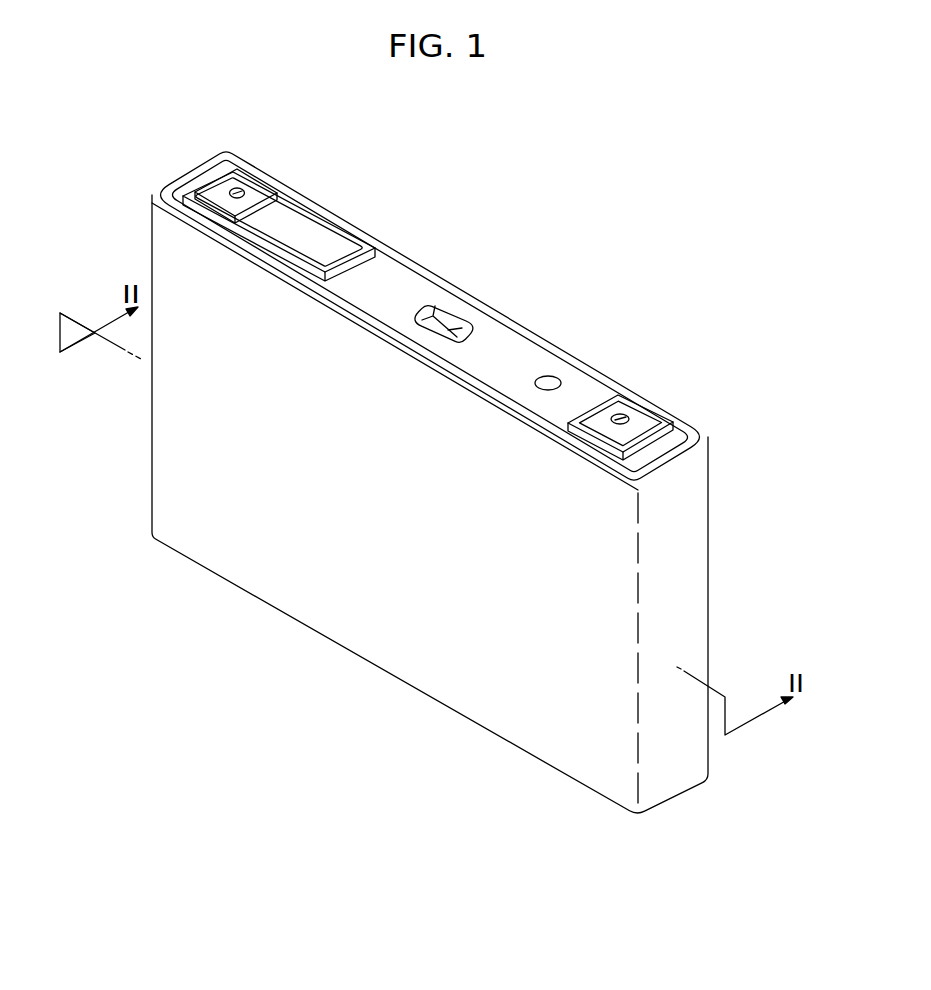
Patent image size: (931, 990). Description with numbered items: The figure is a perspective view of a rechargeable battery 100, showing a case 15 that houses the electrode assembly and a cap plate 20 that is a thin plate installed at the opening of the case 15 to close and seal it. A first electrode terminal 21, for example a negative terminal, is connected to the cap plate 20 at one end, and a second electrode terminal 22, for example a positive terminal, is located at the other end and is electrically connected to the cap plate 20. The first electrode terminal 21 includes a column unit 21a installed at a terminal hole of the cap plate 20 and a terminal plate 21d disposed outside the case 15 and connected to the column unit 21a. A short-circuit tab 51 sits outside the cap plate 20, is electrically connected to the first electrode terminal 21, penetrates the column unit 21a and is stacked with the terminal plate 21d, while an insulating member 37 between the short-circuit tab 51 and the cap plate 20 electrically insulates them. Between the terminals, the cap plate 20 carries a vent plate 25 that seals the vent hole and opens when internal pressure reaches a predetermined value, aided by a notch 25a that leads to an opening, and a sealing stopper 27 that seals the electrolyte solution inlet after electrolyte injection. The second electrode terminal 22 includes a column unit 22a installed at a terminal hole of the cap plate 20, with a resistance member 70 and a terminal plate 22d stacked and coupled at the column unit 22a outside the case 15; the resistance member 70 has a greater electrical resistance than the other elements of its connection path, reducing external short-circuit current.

The rechargeable battery 100 is at (544, 290).
The case 15 is at (360, 624).
The cap plate 20 is at (387, 270).
The first electrode terminal 21 is at (246, 173).
The column unit 21a is at (231, 189).
The terminal plate 21d is at (217, 190).
The second electrode terminal 22 is at (625, 398).
The column unit 22a is at (645, 417).
The terminal plate 22d is at (672, 408).
The vent plate 25 is at (434, 302).
The notch 25a is at (451, 322).
The sealing stopper 27 is at (551, 376).
The insulating member 37 is at (298, 205).
The short-circuit tab 51 is at (307, 237).
The resistance member 70 is at (652, 435).